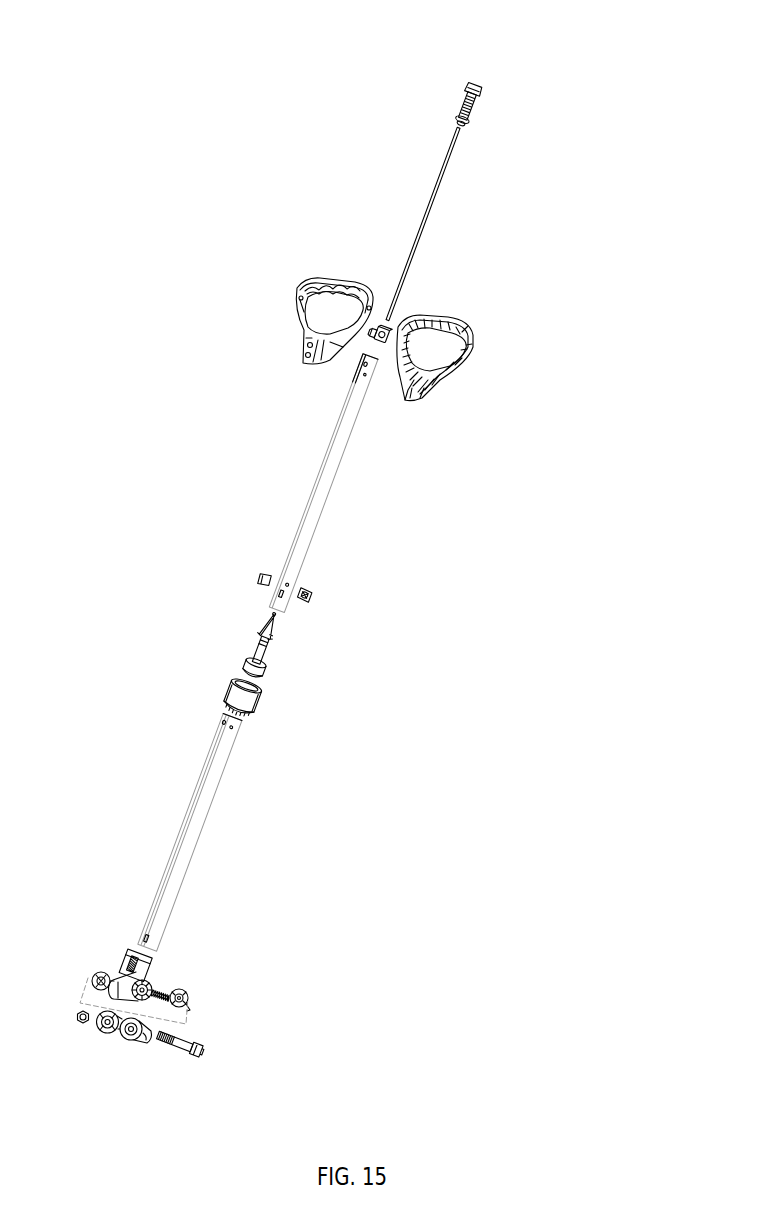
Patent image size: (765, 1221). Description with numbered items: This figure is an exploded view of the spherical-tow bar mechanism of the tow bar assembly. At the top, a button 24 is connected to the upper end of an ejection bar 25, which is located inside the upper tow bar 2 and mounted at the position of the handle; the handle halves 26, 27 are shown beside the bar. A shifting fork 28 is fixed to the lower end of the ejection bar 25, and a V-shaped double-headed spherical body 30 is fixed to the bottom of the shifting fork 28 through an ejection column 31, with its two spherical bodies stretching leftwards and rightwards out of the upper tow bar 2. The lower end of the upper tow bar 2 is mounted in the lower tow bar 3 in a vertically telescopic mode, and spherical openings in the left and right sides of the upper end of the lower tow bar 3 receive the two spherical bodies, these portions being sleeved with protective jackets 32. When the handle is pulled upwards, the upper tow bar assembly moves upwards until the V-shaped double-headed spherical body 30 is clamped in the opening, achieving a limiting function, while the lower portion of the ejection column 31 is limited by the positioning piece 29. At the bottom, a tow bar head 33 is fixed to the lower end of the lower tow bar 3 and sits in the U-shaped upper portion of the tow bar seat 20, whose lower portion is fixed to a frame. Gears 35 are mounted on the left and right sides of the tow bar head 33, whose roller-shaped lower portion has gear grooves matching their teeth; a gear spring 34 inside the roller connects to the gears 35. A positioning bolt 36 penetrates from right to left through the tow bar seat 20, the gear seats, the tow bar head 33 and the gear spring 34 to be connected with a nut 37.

The upper tow bar 2 is at (376, 483).
The lower tow bar 3 is at (254, 833).
The tow bar seat 20 is at (189, 1004).
The button 24 is at (540, 70).
The ejection bar 25 is at (493, 206).
The handle half 26 is at (438, 263).
The handle half 27 is at (458, 358).
The shifting fork 28 is at (457, 289).
The positioning piece 29 is at (352, 569).
The V-shaped double-headed spherical body 30 is at (343, 615).
The ejection column 31 is at (325, 657).
The protective jacket 32 is at (306, 705).
The tow bar head 33 is at (222, 906).
The gear spring 34 is at (243, 931).
The gear 35 is at (243, 961).
The positioning bolt 36 is at (217, 1040).
The nut 37 is at (168, 1069).